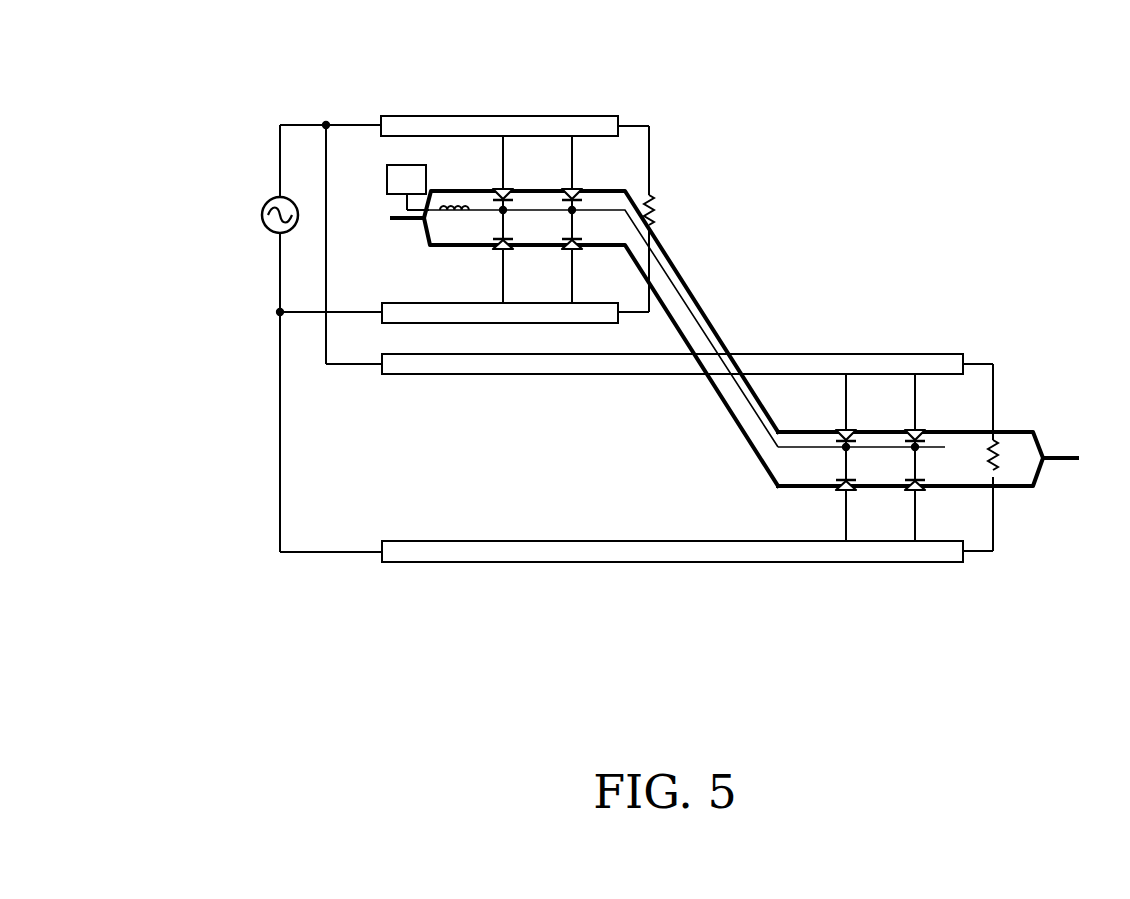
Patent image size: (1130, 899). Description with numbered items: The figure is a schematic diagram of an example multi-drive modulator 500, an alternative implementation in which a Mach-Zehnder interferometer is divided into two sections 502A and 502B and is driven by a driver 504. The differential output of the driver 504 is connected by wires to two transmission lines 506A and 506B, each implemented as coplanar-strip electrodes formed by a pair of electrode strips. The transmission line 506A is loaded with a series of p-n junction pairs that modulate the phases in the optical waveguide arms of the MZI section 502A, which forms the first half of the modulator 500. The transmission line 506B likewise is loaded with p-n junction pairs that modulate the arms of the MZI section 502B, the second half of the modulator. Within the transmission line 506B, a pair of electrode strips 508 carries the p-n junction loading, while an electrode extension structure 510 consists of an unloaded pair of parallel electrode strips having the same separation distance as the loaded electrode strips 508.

The modulator 500 is at (823, 70).
The MZI section 502A is at (632, 167).
The MZI section 502B is at (976, 408).
The driver 504 is at (280, 197).
The transmission line 506A is at (381, 98).
The transmission line 506B is at (978, 657).
The pair of electrode strips 508 is at (793, 585).
The electrode extension structure 510 is at (787, 585).